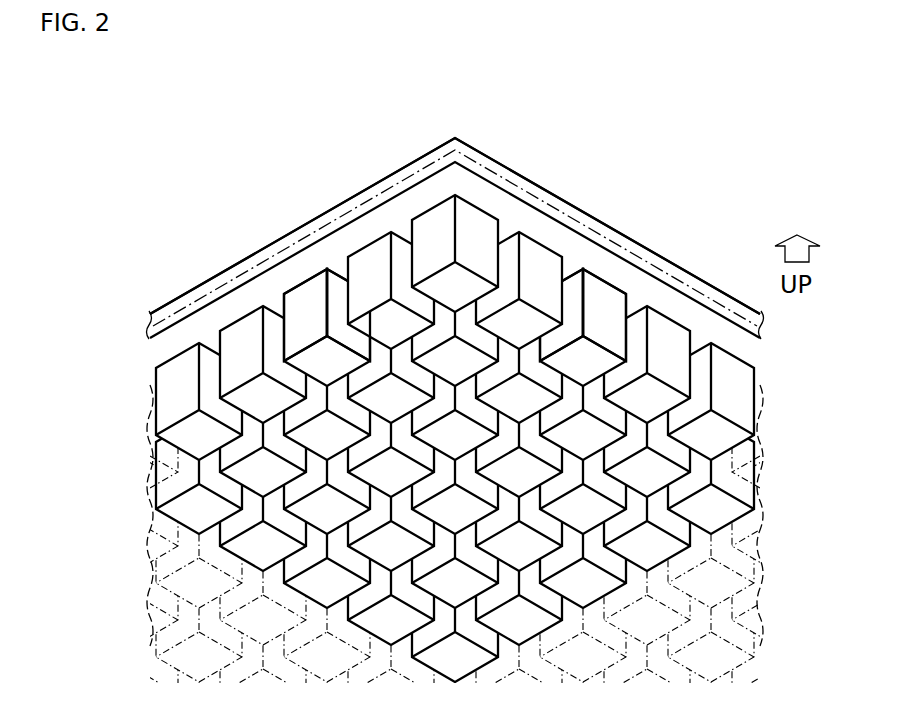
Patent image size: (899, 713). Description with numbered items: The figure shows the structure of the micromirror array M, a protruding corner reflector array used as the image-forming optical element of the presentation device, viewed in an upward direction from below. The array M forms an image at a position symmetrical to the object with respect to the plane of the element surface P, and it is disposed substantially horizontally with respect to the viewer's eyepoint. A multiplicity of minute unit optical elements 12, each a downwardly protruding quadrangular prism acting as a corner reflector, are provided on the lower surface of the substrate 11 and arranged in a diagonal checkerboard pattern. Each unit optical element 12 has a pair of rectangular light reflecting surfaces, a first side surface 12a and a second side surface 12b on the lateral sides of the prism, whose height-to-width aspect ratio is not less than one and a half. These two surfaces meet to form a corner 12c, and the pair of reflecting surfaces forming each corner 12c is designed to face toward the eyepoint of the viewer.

The substrate 11 is at (386, 178).
The unit optical element 12 is at (475, 229).
The first side surface 12a is at (300, 320).
The second side surface 12b is at (333, 304).
The corner 12c is at (326, 300).
The micromirror array M is at (446, 134).
The plane of the element surface P is at (470, 157).